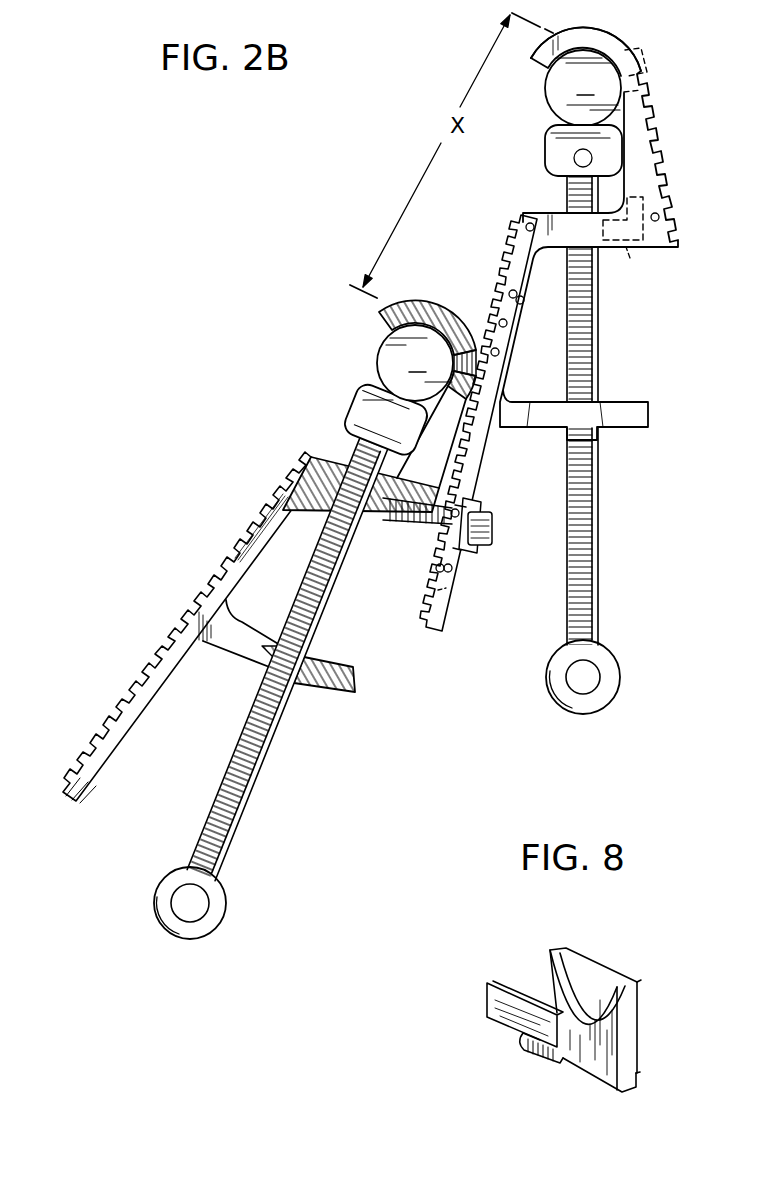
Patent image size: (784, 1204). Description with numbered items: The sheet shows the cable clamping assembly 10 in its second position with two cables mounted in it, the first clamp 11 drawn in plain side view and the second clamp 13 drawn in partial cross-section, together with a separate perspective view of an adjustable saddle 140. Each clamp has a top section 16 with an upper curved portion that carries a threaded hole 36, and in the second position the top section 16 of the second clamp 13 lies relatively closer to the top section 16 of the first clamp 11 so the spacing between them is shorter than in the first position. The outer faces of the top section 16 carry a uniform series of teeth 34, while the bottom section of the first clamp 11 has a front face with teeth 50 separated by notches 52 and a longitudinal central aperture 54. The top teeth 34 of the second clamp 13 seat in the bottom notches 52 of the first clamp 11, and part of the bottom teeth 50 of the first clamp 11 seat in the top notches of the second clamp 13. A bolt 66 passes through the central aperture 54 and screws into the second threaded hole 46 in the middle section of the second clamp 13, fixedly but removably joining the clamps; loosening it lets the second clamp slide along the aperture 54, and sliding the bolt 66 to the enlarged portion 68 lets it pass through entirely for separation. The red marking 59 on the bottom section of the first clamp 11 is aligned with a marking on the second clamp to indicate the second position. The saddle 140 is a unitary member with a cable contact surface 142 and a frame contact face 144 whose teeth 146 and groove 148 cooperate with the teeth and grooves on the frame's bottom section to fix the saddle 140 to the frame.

In FIG. 2B, the assembly 10 is at (214, 403).
In FIG. 2B, the first clamp 11 is at (651, 432).
In FIG. 2B, the second clamp 13 is at (352, 694).
In FIG. 2B, the top section 16 is at (403, 308).
In FIG. 2B, the teeth 34 is at (464, 455).
In FIG. 2B, the threaded hole 36 is at (479, 346).
In FIG. 2B, the second threaded hole 46 is at (630, 258).
In FIG. 2B, the teeth 50 is at (443, 530).
In FIG. 2B, the notches 52 is at (490, 436).
In FIG. 2B, the central aperture 54 is at (120, 738).
In FIG. 2B, the red colored marking 59 is at (462, 509).
In FIG. 2B, the bolt 66 is at (492, 530).
In FIG. 2B, the enlarged portion 68 is at (212, 625).
In FIG. 8, the saddle 140 is at (485, 1000).
In FIG. 8, the cable contact surface 142 is at (545, 985).
In FIG. 8, the frame contact face 144 is at (637, 1002).
In FIG. 8, the teeth 146 is at (643, 980).
In FIG. 8, the groove 148 is at (637, 1043).